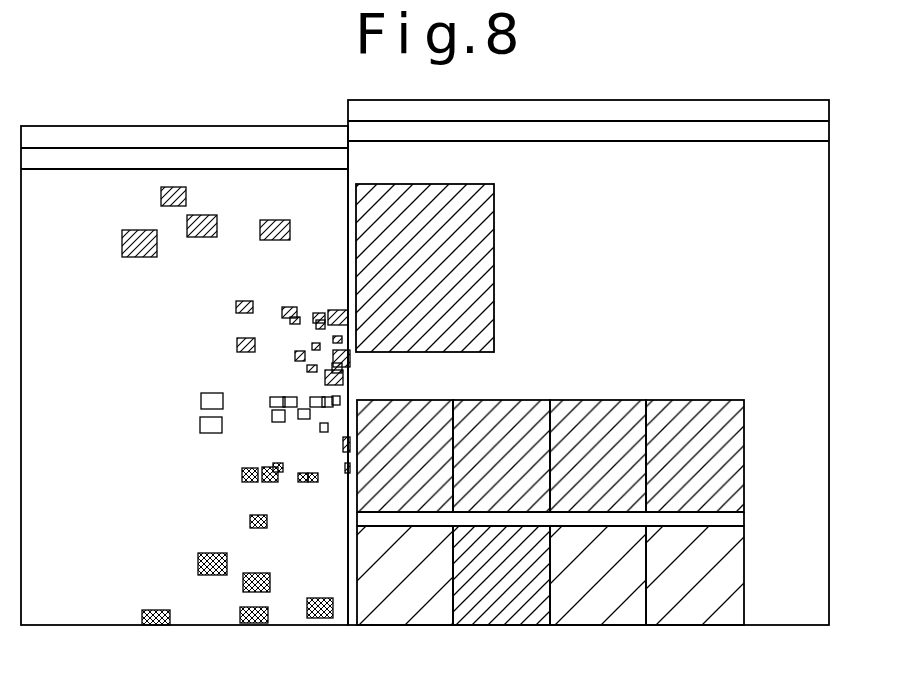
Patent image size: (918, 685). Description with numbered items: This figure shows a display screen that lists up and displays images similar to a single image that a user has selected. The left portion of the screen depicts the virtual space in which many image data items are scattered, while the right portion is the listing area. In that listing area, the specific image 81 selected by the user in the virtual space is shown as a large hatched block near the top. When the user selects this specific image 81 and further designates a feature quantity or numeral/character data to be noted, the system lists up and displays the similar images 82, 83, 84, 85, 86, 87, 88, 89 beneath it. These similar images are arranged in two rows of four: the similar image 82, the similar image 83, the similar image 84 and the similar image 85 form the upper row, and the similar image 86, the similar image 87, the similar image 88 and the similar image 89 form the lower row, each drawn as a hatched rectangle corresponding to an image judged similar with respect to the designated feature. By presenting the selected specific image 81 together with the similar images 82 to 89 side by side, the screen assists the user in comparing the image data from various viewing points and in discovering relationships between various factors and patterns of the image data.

The specific image 81 is at (468, 232).
The similar image 82 is at (395, 423).
The similar image 83 is at (492, 418).
The similar image 84 is at (597, 415).
The similar image 85 is at (695, 413).
The similar image 86 is at (403, 612).
The similar image 87 is at (512, 610).
The similar image 88 is at (597, 607).
The similar image 89 is at (690, 607).